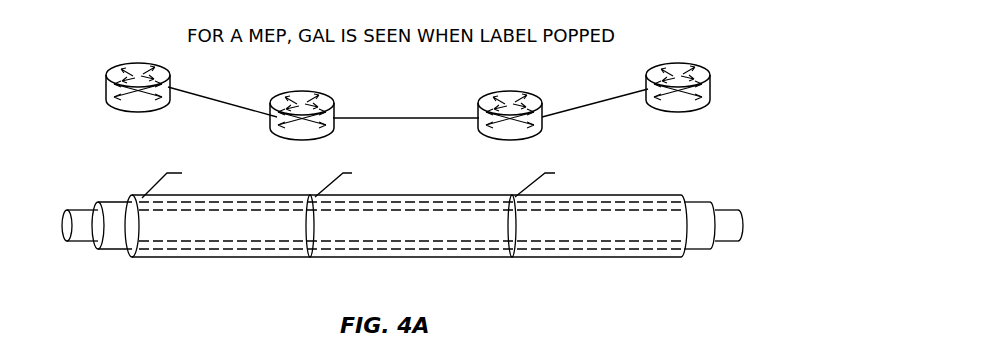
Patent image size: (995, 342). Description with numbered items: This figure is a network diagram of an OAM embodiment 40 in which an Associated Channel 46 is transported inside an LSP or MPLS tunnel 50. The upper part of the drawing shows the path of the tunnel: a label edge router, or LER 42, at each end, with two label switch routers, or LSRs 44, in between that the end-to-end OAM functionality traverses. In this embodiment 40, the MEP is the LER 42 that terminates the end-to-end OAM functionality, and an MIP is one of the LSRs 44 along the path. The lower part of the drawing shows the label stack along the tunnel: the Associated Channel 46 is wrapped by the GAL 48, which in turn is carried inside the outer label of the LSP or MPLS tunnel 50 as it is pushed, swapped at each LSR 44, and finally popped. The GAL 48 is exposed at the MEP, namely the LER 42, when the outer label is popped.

The OAM embodiment 40 is at (719, 146).
The LER 42 is at (107, 84).
The LSR 44 is at (340, 97).
The Associated Channel 46 is at (727, 242).
The GAL 48 is at (702, 249).
The LSP or MPLS tunnel 50 is at (633, 257).